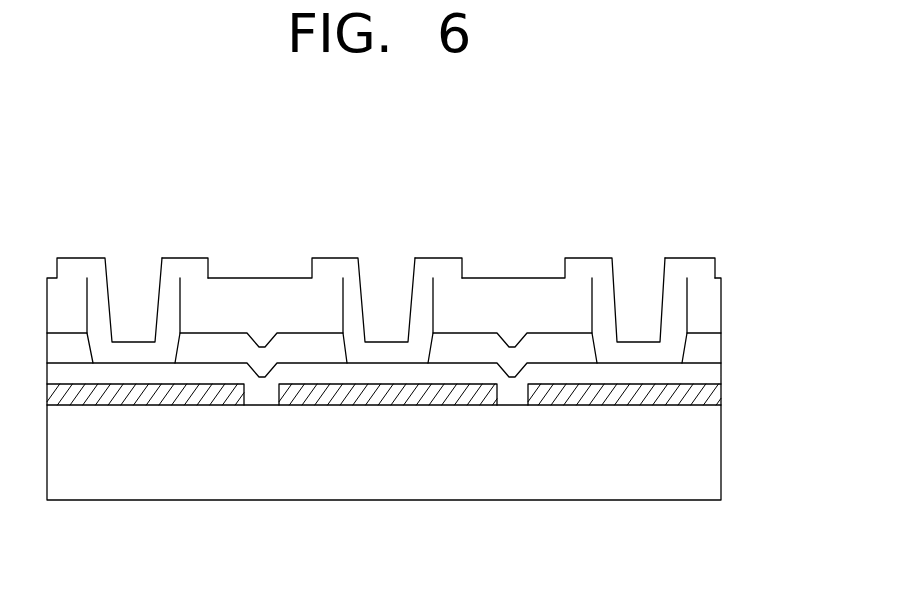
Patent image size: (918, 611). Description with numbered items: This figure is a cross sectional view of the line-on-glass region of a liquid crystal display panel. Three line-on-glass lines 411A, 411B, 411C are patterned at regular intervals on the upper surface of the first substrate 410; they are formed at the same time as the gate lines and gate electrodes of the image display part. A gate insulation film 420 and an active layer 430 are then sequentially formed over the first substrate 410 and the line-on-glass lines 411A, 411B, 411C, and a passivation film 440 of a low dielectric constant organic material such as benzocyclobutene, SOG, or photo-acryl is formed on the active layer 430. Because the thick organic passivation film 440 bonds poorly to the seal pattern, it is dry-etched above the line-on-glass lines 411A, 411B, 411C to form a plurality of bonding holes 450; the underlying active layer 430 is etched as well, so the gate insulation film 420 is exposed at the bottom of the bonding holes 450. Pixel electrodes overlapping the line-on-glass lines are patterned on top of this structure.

The first substrate 410 is at (710, 445).
The line-on-glass line 411A is at (147, 395).
The line-on-glass line 411B is at (392, 395).
The line-on-glass line 411C is at (637, 395).
The gate insulation film 420 is at (710, 374).
The active layer 430 is at (710, 348).
The passivation film 440 is at (710, 308).
The bonding holes 450 is at (130, 292).